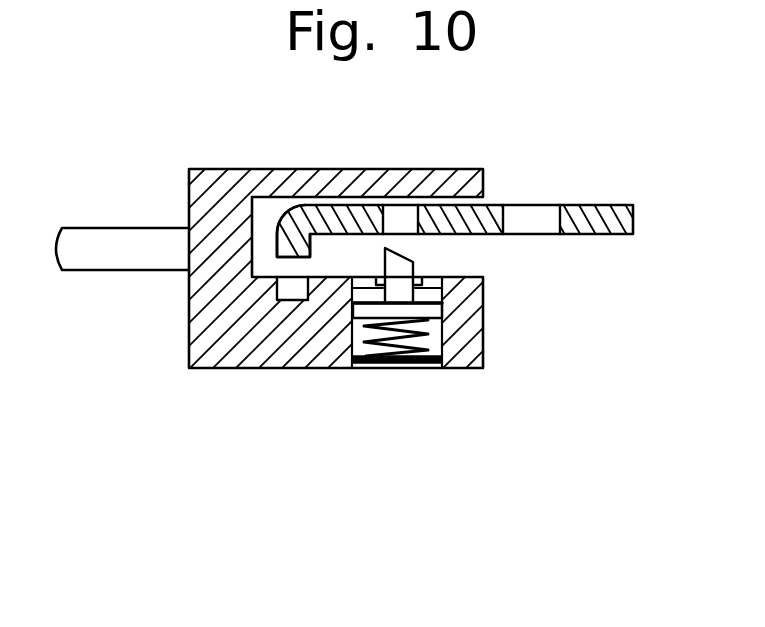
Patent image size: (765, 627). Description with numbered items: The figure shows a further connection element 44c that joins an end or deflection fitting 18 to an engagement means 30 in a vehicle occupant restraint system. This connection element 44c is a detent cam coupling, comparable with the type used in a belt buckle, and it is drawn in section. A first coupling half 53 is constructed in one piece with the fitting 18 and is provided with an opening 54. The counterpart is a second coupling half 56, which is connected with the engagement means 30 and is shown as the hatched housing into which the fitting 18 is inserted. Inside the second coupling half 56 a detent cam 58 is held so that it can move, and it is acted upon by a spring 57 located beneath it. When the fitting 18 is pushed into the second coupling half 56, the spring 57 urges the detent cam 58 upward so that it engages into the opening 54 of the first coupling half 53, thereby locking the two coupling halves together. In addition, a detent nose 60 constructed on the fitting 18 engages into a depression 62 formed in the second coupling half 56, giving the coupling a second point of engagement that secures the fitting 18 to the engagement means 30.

The fitting 18 is at (615, 205).
The engagement means 30 is at (108, 240).
The connection element 44c is at (140, 302).
The first coupling half 53 is at (498, 234).
The opening 54 is at (397, 215).
The second coupling half 56 is at (218, 345).
The spring 57 is at (420, 366).
The detent cam 58 is at (443, 308).
The detent nose 60 is at (282, 243).
The depression 62 is at (298, 292).